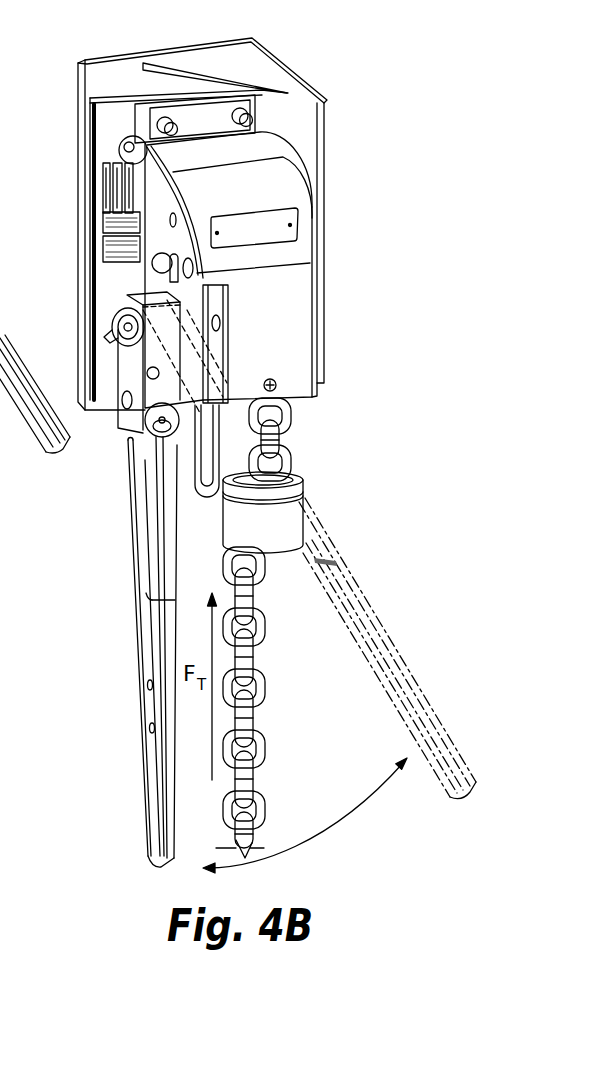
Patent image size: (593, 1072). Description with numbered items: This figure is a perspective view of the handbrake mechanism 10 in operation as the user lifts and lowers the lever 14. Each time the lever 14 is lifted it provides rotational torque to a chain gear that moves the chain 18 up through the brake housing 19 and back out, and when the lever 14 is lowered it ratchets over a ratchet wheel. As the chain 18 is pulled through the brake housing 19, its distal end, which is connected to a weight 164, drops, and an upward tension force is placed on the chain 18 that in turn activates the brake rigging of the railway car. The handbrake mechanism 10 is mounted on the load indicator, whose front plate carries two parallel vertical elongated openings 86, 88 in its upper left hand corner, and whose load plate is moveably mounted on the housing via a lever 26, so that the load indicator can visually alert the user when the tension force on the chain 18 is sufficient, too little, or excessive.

The handbrake mechanism 10 is at (359, 286).
The lever 14 is at (348, 587).
The chain 18 is at (265, 743).
The brake housing 19 is at (298, 327).
The lever 26 is at (132, 197).
The vertical elongated opening 86 is at (103, 163).
The vertical elongated opening 88 is at (120, 158).
The weight 164 is at (298, 488).